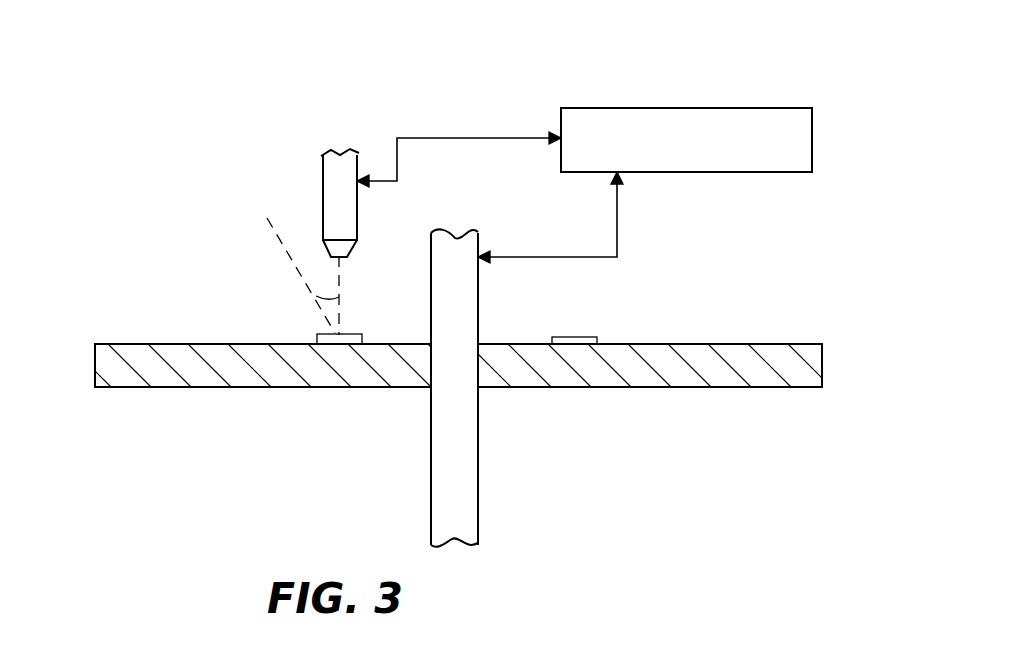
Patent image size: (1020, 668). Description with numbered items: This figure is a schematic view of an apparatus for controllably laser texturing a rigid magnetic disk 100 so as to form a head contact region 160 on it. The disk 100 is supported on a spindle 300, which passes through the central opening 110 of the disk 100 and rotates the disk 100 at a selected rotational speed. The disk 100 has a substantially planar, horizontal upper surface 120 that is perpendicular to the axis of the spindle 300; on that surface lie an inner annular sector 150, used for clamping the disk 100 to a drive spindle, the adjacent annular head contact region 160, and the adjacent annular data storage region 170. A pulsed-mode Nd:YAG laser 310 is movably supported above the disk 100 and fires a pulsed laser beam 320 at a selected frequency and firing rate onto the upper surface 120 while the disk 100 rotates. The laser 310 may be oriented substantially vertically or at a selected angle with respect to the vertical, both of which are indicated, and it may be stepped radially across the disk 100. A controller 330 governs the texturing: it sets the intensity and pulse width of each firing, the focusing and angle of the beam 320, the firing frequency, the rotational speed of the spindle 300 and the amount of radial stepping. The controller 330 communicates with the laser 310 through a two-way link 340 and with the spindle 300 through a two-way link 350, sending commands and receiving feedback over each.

The rigid magnetic disk 100 is at (790, 268).
The central opening 110 is at (478, 372).
The upper surface 120 is at (133, 344).
The inner annular sector 150 is at (487, 343).
The head contact region 160 is at (573, 337).
The data storage region 170 is at (695, 343).
The spindle 300 is at (467, 497).
The laser 310 is at (327, 210).
The pulsed laser beam 320 is at (338, 308).
The controller 330 is at (665, 108).
The two-way link 340 is at (476, 138).
The two-way link 350 is at (618, 238).